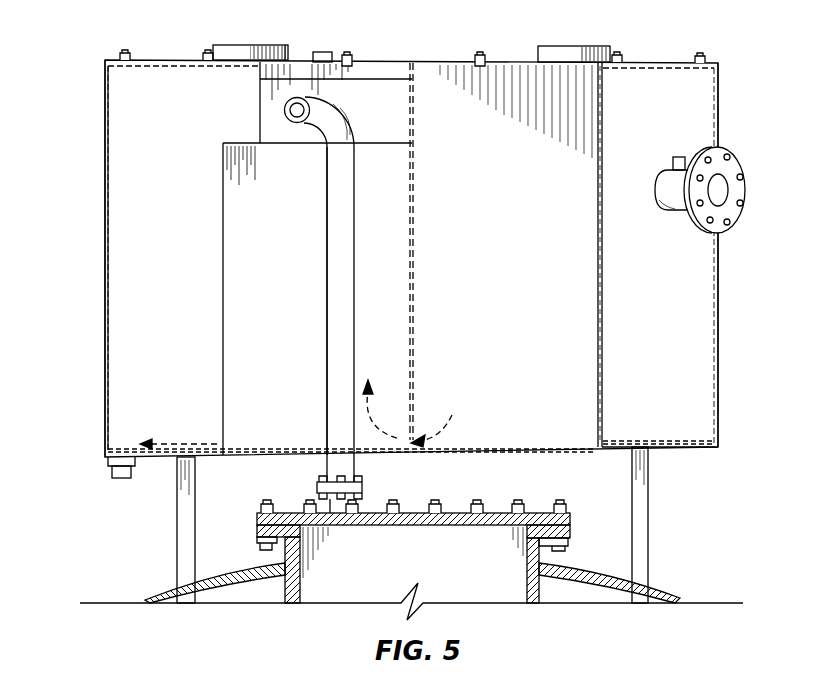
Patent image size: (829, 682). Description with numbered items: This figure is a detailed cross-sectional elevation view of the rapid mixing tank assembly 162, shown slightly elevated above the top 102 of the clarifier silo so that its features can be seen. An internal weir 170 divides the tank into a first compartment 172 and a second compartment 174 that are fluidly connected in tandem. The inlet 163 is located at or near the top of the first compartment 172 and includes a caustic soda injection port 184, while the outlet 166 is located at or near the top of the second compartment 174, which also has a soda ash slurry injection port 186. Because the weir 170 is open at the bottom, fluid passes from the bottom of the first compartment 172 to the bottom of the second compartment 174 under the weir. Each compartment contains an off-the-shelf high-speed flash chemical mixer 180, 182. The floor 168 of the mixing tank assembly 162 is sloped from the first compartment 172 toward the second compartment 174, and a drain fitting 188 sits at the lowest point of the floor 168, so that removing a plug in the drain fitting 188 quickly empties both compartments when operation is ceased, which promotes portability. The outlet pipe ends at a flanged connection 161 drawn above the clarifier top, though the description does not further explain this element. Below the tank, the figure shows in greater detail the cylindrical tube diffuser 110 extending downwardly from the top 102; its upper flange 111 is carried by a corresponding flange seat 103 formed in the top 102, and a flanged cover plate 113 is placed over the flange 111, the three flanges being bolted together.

The top 102 is at (660, 597).
The flange seat 103 is at (568, 544).
The cylindrical tube diffuser 110 is at (542, 592).
The upper flange 111 is at (572, 532).
The flanged cover plate 113 is at (257, 516).
The pipe flange 161 is at (317, 487).
The rapid mixing tank assembly 162 is at (105, 296).
The inlet 163 is at (746, 195).
The outlet 166 is at (285, 113).
The floor 168 is at (690, 452).
The internal weir 170 is at (420, 288).
The first compartment 172 is at (722, 97).
The second compartment 174 is at (105, 190).
The high-speed flash chemical mixer 180 is at (577, 46).
The high-speed flash chemical mixer 182 is at (262, 45).
The caustic soda injection port 184 is at (680, 157).
The soda ash slurry injection port 186 is at (322, 52).
The drain fitting 188 is at (120, 480).